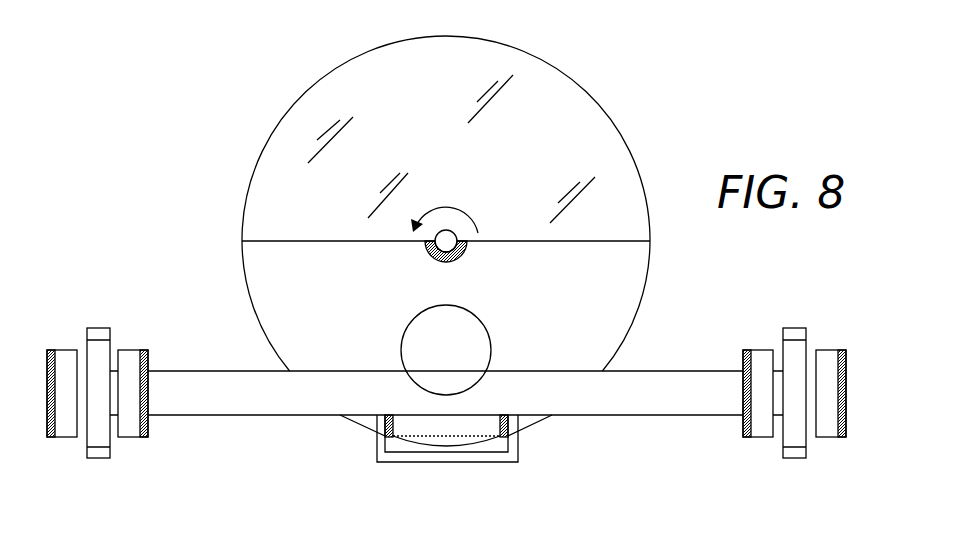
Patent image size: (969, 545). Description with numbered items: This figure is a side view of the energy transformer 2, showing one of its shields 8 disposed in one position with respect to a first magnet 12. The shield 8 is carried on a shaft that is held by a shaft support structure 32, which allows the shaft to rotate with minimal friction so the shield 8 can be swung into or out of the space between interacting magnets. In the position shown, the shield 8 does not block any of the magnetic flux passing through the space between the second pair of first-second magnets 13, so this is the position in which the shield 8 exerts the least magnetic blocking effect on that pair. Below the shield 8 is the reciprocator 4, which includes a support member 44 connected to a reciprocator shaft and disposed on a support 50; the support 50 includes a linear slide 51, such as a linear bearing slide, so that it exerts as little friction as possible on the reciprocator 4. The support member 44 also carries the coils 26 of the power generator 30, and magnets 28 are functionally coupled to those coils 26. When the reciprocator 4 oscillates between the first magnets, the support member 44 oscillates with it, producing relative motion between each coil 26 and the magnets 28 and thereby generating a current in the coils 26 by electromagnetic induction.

The energy transformer 2 is at (233, 53).
The reciprocator 4 is at (711, 274).
The shield 8 is at (584, 88).
The first magnet 12 is at (446, 350).
The second pair of first-second magnets 13 is at (326, 446).
The coil 26 is at (96, 459).
The magnet 28 is at (66, 350).
The power generator 30 is at (92, 266).
The shaft support structure 32 is at (458, 262).
The support member 44 is at (622, 405).
The support 50 is at (473, 457).
The linear slide 51 is at (425, 440).